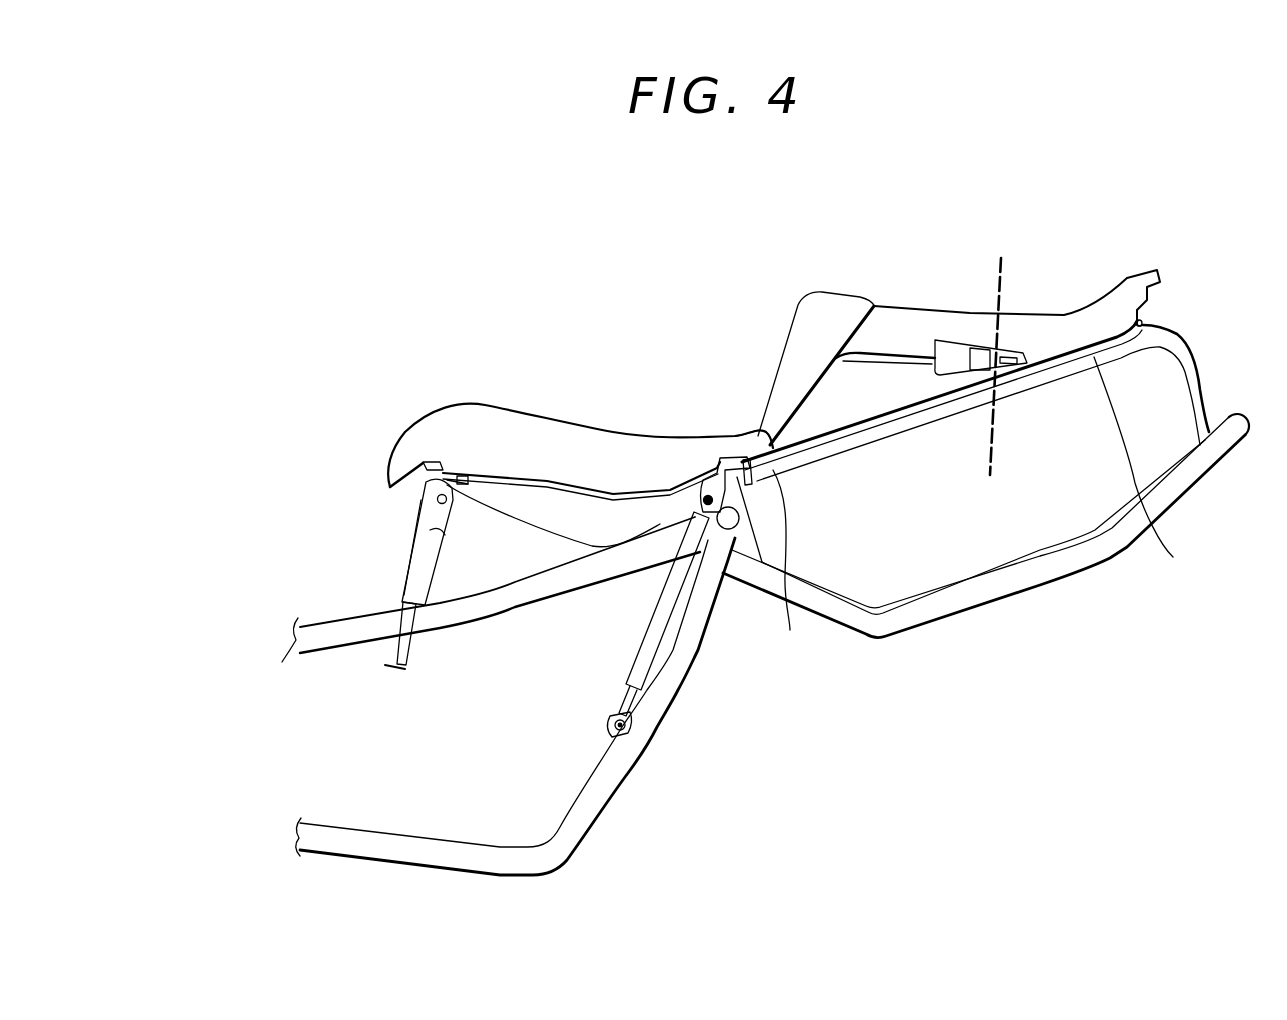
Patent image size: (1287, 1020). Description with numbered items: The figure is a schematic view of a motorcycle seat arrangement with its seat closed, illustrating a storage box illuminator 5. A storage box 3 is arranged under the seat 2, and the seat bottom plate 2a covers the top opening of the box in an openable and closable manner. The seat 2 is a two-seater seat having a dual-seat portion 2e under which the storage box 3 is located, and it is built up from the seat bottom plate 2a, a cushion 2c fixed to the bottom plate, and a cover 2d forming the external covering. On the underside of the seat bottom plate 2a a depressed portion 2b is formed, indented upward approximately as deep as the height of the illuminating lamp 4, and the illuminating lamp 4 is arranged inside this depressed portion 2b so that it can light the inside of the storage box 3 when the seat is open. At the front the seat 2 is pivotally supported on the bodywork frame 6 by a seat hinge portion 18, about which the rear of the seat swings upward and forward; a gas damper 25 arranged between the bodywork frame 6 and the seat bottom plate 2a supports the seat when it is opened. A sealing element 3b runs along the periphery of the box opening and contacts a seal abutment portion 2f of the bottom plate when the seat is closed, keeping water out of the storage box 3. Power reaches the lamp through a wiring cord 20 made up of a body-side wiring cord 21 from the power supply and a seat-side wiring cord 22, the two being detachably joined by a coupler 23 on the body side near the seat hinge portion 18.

The seat 2 is at (571, 428).
The seat bottom plate 2a is at (830, 428).
The depressed portion 2b is at (958, 345).
The cushion 2c is at (1127, 288).
The cover 2d is at (1065, 310).
The dual-seat portion 2e is at (903, 306).
The seal abutment portion 2f is at (735, 438).
The storage box 3 is at (1207, 372).
The sealing element 3b is at (990, 511).
The illuminating lamp 4 is at (1027, 370).
The storage box illuminator 5 is at (998, 262).
The bodywork frame 6 is at (650, 730).
The seat hinge portion 18 is at (440, 480).
The wiring cord 20 is at (305, 486).
The body-side wiring cord 21 is at (393, 657).
The seat-side wiring cord 22 is at (418, 524).
The coupler 23 is at (397, 630).
The gas damper 25 is at (662, 620).